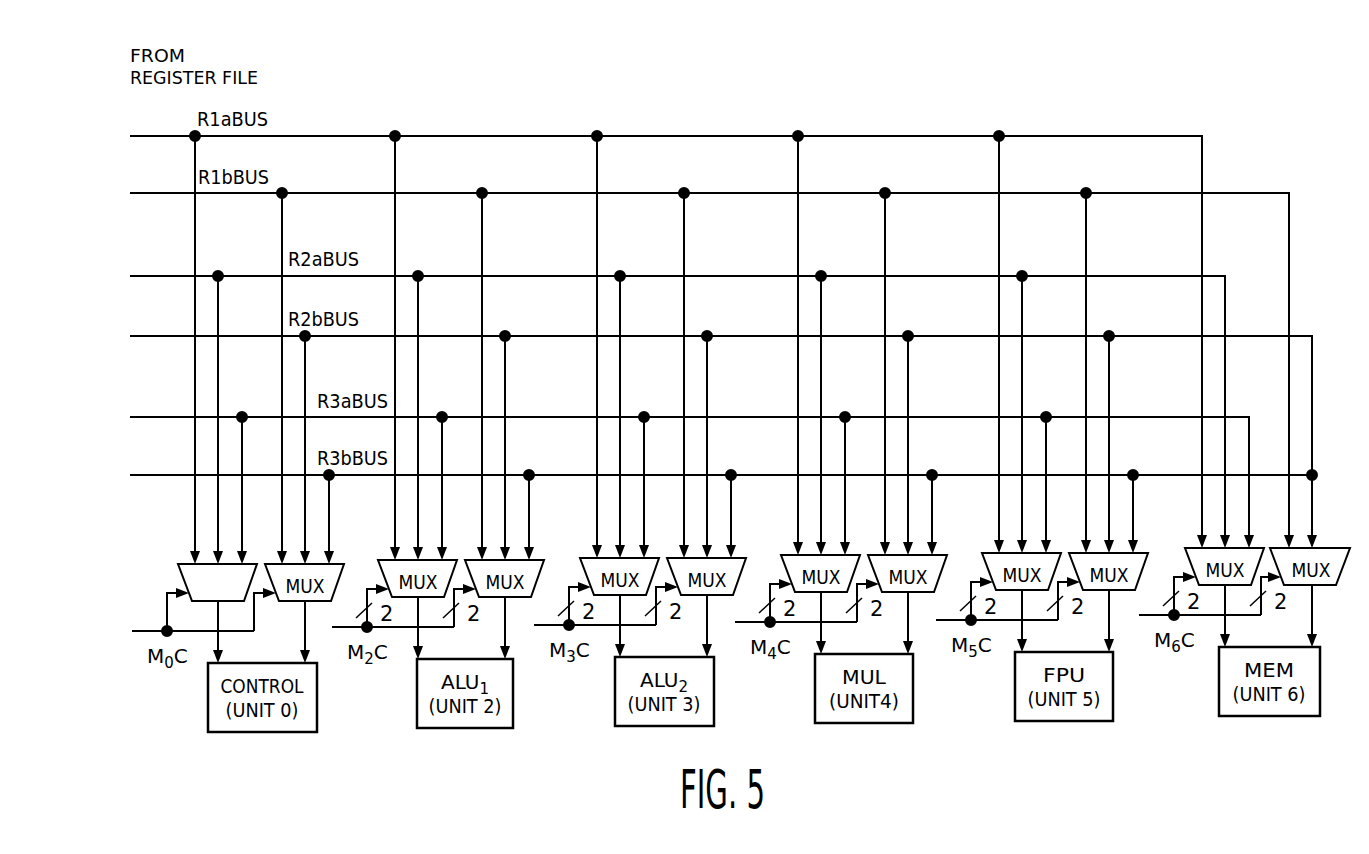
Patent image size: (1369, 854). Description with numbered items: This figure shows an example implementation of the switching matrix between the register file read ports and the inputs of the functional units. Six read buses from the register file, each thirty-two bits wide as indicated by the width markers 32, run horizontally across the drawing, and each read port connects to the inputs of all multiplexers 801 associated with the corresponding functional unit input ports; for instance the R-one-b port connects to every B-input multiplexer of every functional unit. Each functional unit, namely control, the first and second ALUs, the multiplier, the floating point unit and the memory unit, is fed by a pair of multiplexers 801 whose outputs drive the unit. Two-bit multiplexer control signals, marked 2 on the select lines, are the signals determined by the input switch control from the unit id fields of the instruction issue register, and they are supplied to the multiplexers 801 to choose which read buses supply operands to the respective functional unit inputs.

The multiplexer 801 is at (167, 582).
The 32-bit register file bus 32 is at (163, 469).
The 2-bit multiplexer select input 2 is at (206, 612).